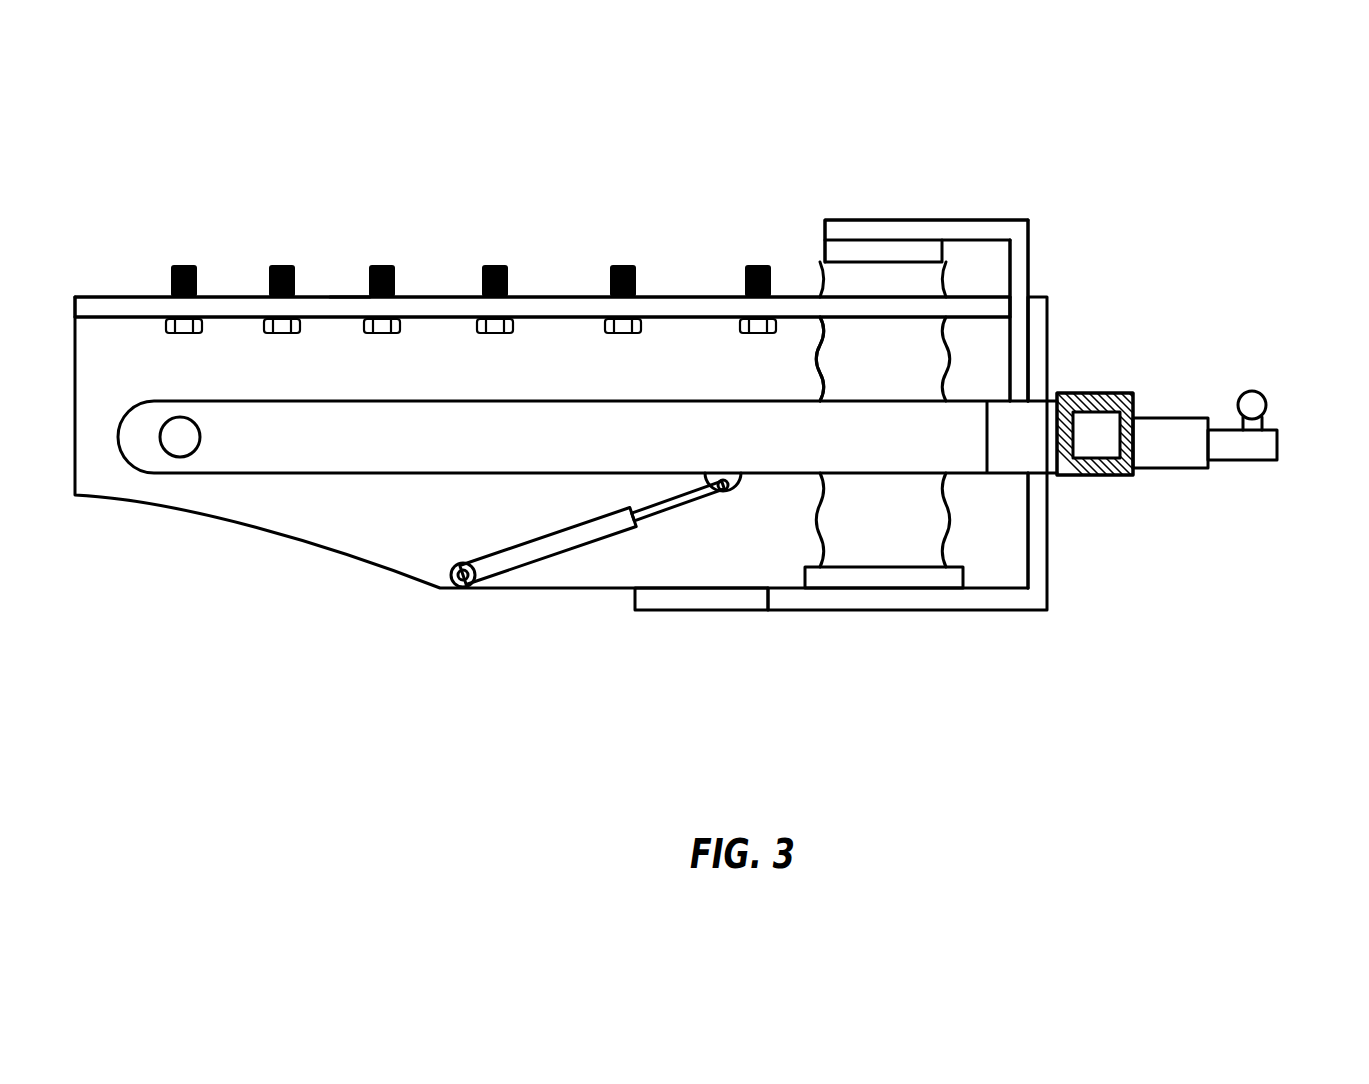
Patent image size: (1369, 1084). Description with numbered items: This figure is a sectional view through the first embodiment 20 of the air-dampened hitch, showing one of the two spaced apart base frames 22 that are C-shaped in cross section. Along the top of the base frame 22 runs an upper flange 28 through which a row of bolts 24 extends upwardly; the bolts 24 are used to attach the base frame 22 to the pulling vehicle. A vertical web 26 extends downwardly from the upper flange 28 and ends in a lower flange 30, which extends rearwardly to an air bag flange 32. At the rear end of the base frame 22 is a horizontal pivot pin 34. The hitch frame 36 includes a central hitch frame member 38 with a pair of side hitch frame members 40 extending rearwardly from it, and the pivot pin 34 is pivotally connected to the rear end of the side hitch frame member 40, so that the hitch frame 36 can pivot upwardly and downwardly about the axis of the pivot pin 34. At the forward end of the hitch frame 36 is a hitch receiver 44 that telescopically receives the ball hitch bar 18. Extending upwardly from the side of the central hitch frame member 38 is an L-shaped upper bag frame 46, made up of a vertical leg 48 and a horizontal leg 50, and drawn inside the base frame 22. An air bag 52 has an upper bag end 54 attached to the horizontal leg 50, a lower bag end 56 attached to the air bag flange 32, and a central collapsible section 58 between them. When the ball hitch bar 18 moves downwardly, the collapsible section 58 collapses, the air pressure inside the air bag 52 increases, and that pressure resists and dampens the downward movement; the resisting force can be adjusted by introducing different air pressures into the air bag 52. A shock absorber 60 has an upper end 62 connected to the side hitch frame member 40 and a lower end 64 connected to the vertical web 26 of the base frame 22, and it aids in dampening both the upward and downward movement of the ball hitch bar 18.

The ball hitch bar 18 is at (1268, 404).
The first embodiment 20 is at (542, 237).
The base frame 22 is at (347, 294).
The bolts 24 is at (751, 336).
The vertical web 26 is at (290, 526).
The upper flange 28 is at (107, 296).
The lower flange 30 is at (677, 612).
The air bag flange 32 is at (835, 612).
The horizontal pivot pin 34 is at (202, 445).
The hitch frame 36 is at (1120, 394).
The central hitch frame member 38 is at (1100, 476).
The side hitch frame member 40 is at (568, 456).
The hitch receiver 44 is at (1187, 470).
The L-shaped upper bag frame 46 is at (1029, 221).
The vertical leg 48 is at (1030, 265).
The horizontal leg 50 is at (920, 218).
The air bag 52 is at (812, 286).
The upper bag end 54 is at (822, 242).
The lower bag end 56 is at (965, 580).
The central collapsible section 58 is at (816, 352).
The shock absorber 60 is at (538, 537).
The upper end 62 is at (700, 497).
The lower end 64 is at (458, 566).